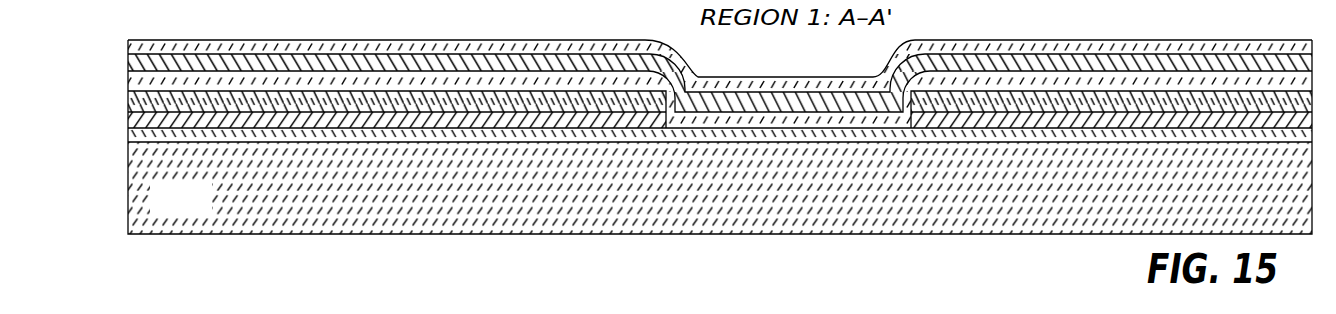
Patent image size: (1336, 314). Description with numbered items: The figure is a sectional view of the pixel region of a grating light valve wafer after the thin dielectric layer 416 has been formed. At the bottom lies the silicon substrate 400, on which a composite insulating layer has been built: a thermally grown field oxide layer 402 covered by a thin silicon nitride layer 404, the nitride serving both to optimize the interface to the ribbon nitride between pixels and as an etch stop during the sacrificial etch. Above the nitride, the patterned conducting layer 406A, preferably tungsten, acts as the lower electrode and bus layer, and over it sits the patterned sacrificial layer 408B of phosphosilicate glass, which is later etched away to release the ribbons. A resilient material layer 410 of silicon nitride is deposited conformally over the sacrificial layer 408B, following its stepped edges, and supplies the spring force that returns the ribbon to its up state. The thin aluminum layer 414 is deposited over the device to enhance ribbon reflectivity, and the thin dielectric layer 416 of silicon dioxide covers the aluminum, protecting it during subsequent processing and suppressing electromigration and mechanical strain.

The silicon substrate 400 is at (203, 271).
The field oxide layer 402 is at (203, 213).
The silicon nitride layer 404 is at (128, 134).
The conducting layer 406A is at (128, 119).
The sacrificial layer 408B is at (128, 100).
The resilient material layer 410 is at (128, 80).
The thin aluminum layer 414 is at (128, 62).
The thin dielectric layer 416 is at (487, 40).